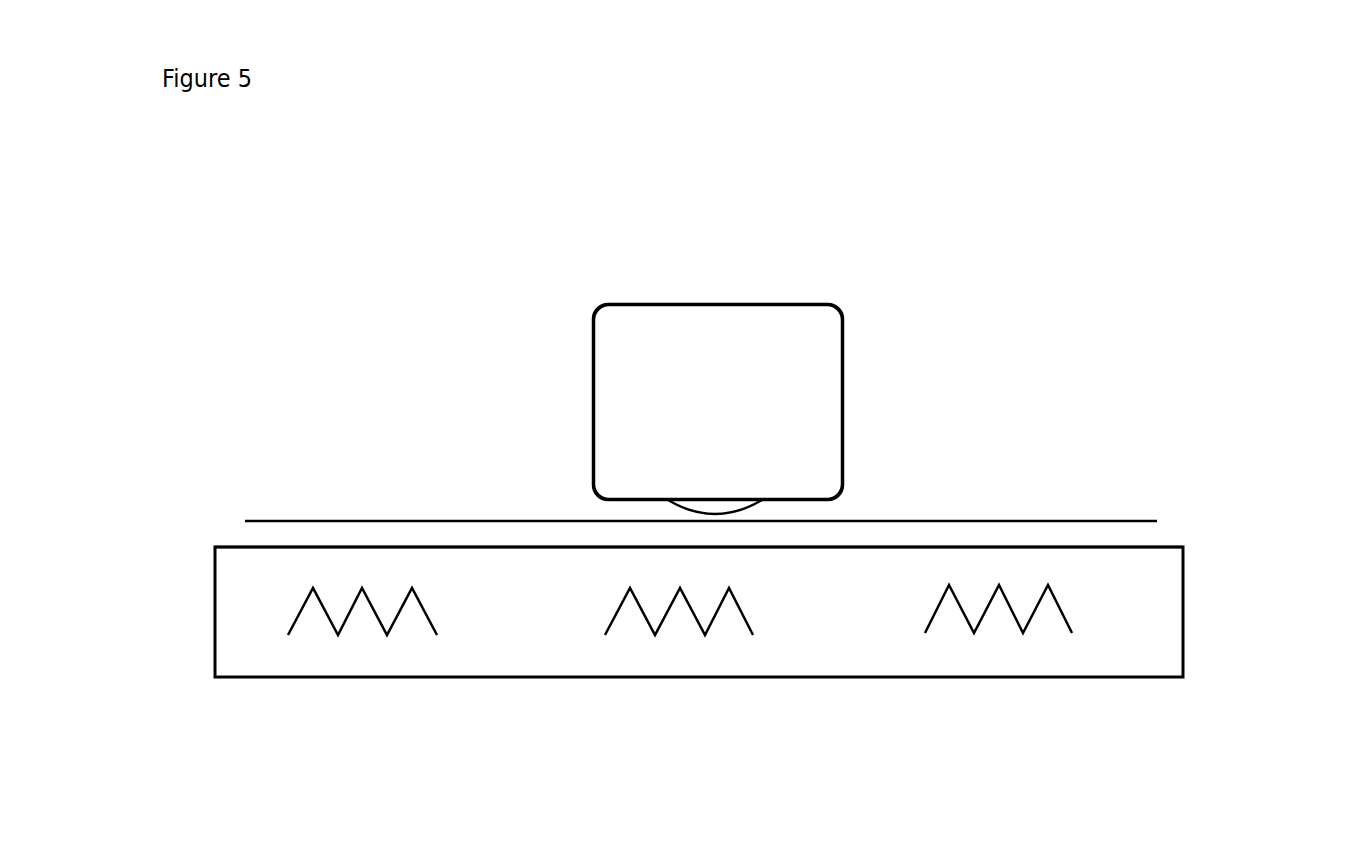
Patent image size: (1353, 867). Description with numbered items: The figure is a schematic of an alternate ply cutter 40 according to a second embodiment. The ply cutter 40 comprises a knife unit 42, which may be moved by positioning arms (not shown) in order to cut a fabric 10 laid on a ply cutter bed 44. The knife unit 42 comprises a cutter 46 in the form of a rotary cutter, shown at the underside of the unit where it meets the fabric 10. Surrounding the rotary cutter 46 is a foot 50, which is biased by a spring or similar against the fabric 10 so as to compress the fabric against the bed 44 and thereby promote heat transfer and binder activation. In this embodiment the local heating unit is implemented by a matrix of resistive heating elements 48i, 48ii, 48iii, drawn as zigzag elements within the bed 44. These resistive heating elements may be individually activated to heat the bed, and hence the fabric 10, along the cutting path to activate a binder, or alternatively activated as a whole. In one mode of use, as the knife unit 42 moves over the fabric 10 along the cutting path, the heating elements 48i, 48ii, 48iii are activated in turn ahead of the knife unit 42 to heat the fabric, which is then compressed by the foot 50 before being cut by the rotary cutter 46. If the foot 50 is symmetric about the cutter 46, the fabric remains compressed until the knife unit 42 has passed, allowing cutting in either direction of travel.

The ply cutter 40 is at (290, 293).
The knife unit 42 is at (533, 300).
The foot 50 is at (715, 345).
The cutter 46 is at (722, 507).
The fabric 10 is at (1035, 518).
The ply cutter bed 44 is at (1150, 587).
The resistive heating element 48i is at (427, 647).
The resistive heating element 48ii is at (730, 642).
The resistive heating element 48iii is at (1066, 638).